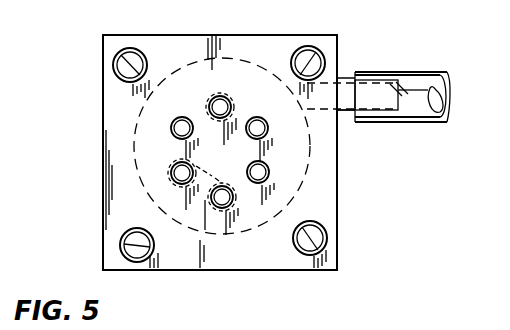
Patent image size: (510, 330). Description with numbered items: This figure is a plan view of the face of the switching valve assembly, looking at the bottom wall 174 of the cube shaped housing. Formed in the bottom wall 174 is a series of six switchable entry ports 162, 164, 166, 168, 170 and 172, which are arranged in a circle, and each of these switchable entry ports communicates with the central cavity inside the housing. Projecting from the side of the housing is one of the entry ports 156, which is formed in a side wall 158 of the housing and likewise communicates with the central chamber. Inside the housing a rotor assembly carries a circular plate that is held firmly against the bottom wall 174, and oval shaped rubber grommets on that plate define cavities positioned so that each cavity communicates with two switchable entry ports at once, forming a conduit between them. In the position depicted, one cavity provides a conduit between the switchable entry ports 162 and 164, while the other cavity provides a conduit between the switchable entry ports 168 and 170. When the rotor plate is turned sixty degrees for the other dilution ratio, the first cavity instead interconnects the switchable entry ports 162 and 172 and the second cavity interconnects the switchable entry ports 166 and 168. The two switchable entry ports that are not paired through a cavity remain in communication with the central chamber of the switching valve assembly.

The entry port 156 is at (343, 78).
The side wall 158 is at (343, 112).
The switchable entry port 162 is at (259, 117).
The switchable entry port 164 is at (228, 100).
The switchable entry port 166 is at (185, 118).
The switchable entry port 168 is at (178, 163).
The switchable entry port 170 is at (222, 186).
The switchable entry port 172 is at (268, 165).
The bottom wall 174 is at (260, 258).